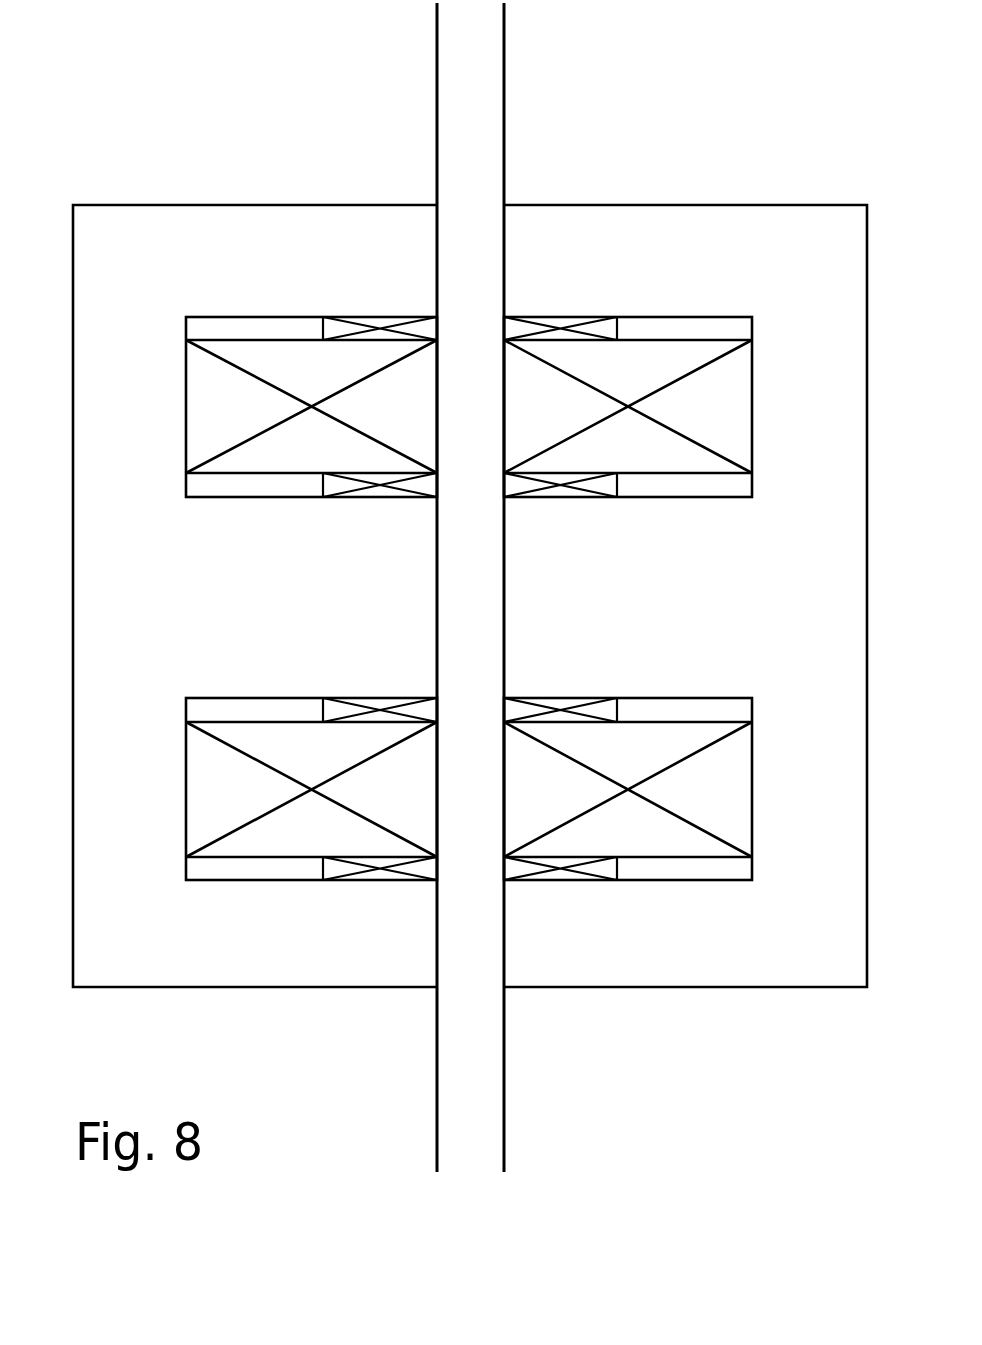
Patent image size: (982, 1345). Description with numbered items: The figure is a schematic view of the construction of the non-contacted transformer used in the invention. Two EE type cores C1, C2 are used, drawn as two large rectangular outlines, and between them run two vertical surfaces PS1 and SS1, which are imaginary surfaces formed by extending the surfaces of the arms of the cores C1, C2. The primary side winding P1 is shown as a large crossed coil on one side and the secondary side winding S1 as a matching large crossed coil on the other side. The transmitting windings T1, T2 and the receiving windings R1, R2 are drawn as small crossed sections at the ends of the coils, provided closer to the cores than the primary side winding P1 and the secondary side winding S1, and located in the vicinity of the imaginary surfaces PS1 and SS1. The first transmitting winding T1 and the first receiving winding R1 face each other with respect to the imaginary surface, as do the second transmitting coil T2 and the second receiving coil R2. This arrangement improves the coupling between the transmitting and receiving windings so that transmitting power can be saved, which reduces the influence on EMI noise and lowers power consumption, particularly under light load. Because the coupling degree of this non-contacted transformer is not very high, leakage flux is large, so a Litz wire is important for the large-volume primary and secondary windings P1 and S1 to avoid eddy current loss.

The EE type core C1 is at (130, 205).
The EE type core C2 is at (752, 205).
The imaginary surface PS1 is at (428, 112).
The imaginary surface SS1 is at (510, 102).
The primary side winding P1 is at (186, 397).
The secondary side winding S1 is at (752, 410).
The first receiving winding R1 is at (378, 497).
The second receiving winding R2 is at (363, 317).
The first transmitting winding T1 is at (562, 497).
The second transmitting winding T2 is at (558, 320).